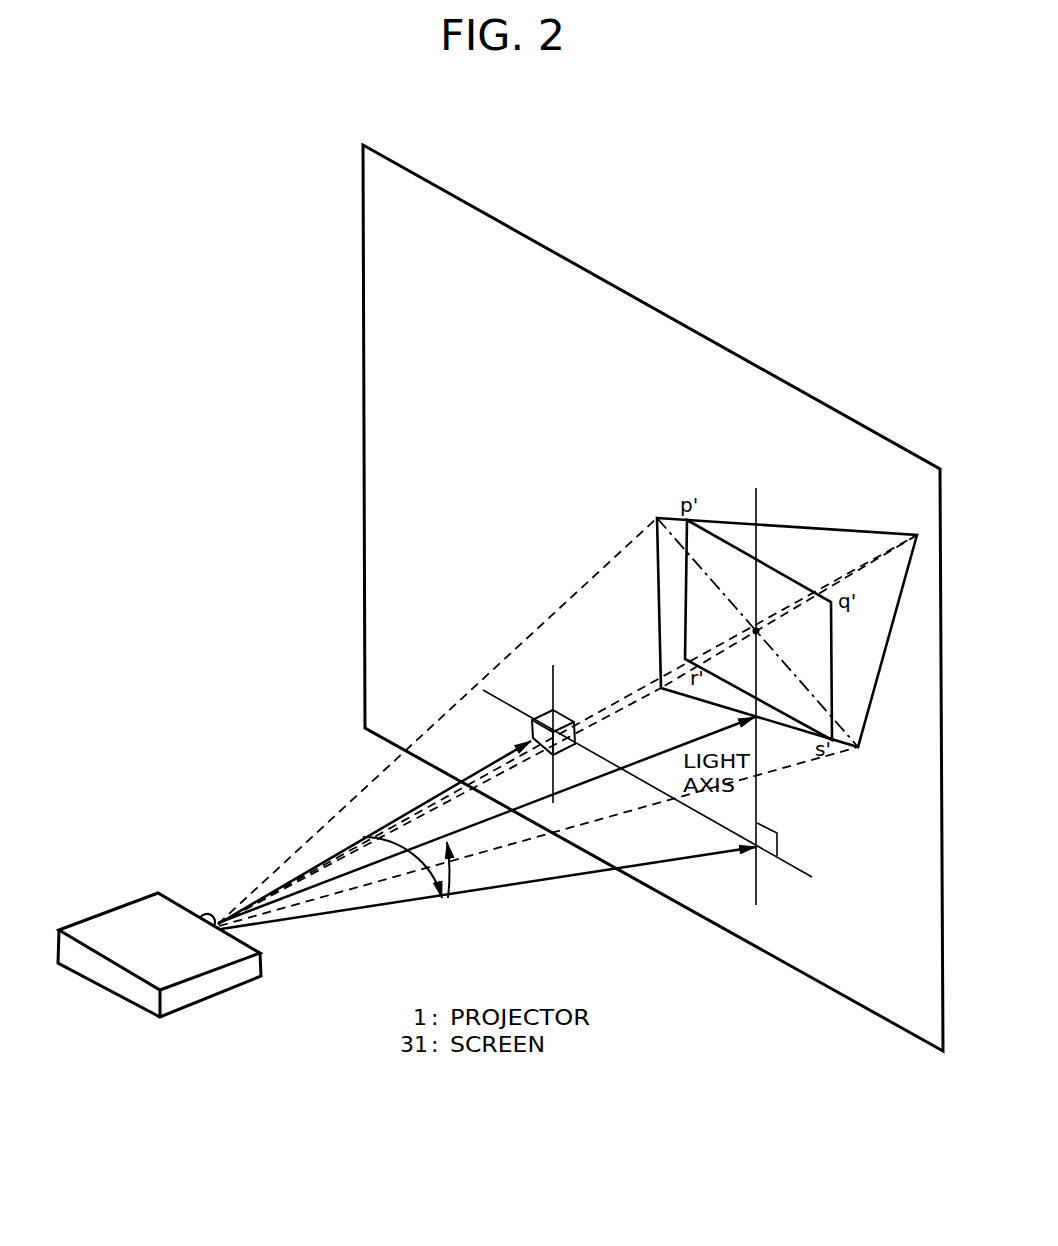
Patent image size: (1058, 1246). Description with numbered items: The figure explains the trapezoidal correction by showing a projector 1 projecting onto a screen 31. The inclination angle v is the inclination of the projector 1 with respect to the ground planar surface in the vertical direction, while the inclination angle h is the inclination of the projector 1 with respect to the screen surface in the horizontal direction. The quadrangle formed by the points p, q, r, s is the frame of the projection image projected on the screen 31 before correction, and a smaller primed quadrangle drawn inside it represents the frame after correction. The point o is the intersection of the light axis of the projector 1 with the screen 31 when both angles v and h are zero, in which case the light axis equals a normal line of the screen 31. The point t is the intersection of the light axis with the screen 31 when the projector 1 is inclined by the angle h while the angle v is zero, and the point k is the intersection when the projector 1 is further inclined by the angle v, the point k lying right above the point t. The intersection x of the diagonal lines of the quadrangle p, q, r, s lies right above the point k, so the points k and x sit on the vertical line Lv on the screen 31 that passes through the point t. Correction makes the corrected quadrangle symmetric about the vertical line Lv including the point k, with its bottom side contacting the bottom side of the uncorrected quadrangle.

The projector 1 is at (158, 893).
The screen 31 is at (409, 170).
The vertical line Lv is at (756, 488).
The point o is at (553, 740).
The intersection x is at (768, 632).
The point k is at (494, 820).
The point t is at (499, 876).
The inclination angle h is at (402, 867).
The inclination angle v is at (459, 870).
The point p is at (440, 708).
The point q is at (575, 720).
The point r is at (440, 806).
The point s is at (545, 835).